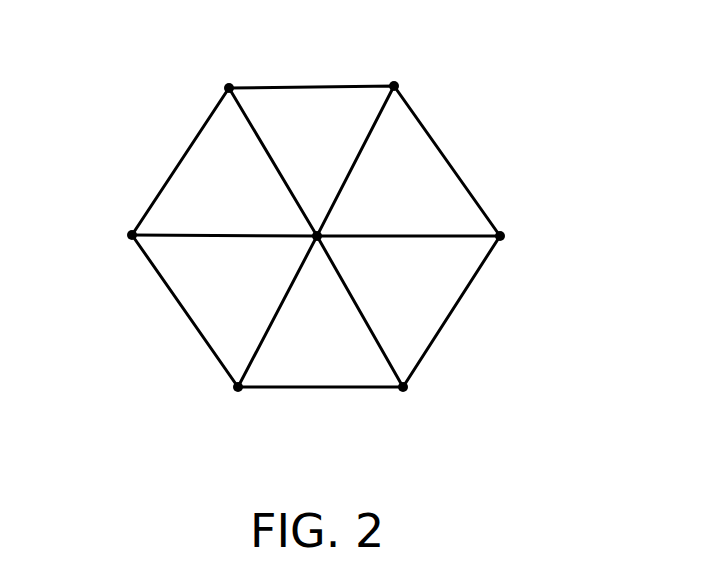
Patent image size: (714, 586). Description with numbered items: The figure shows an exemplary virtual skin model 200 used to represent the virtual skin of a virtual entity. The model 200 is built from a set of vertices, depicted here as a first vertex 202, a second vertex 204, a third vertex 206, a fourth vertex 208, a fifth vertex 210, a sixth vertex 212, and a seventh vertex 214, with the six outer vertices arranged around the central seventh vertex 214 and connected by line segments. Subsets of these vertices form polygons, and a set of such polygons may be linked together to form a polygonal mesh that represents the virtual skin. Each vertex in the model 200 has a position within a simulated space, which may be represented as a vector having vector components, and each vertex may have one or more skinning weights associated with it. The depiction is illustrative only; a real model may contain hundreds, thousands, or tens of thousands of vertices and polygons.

The model 200 is at (526, 89).
The first vertex 202 is at (229, 88).
The second vertex 204 is at (394, 86).
The third vertex 206 is at (500, 236).
The fourth vertex 208 is at (403, 387).
The fifth vertex 210 is at (238, 388).
The sixth vertex 212 is at (132, 236).
The seventh vertex 214 is at (320, 234).